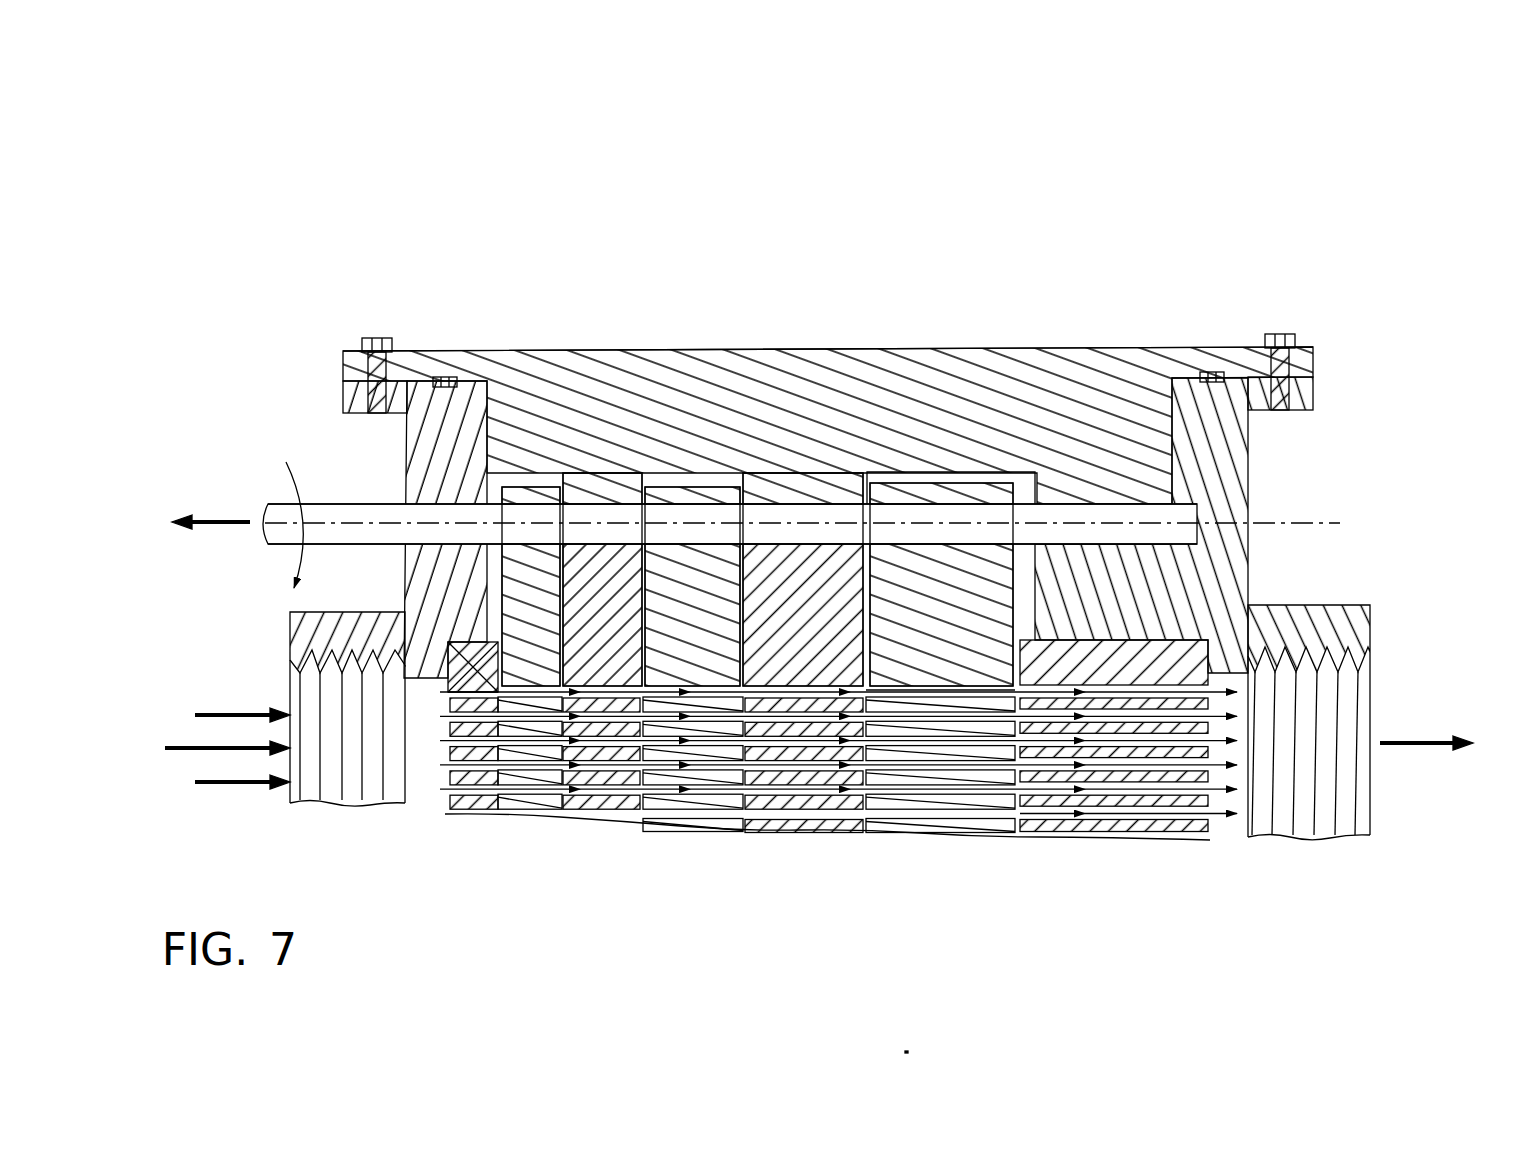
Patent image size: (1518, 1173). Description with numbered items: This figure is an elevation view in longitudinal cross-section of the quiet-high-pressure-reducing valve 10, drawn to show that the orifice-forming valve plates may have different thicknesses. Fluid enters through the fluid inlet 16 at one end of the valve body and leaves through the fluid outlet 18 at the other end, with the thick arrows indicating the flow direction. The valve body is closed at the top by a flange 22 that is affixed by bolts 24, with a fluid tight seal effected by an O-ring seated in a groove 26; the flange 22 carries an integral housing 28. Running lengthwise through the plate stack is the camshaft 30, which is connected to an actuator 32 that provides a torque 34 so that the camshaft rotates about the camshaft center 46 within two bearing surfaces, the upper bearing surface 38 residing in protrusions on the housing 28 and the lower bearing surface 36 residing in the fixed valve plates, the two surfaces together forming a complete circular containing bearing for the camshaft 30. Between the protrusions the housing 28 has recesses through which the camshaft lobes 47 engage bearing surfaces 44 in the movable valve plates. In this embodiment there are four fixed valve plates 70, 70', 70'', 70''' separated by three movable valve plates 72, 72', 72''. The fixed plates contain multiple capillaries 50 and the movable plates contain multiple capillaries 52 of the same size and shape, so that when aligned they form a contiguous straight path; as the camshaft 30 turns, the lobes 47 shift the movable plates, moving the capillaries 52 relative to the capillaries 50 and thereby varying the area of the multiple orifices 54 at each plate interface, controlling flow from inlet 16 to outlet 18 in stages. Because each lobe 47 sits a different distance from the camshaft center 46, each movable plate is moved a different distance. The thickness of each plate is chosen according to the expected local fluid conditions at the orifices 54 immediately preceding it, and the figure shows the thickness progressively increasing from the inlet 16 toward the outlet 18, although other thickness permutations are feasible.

The quiet-high-pressure-reducing valve 10 is at (1003, 340).
The fluid inlet 16 is at (262, 709).
The fluid outlet 18 is at (1377, 722).
The flange 22 is at (515, 370).
The bolts 24 is at (345, 352).
The groove 26 is at (440, 378).
The housing 28 is at (1088, 395).
The camshaft 30 is at (1113, 513).
The actuator 32 is at (666, 524).
The torque 34 is at (281, 533).
The lower bearing surface 36 is at (748, 617).
The upper bearing surface 38 is at (612, 493).
The bearing surfaces in movable valve plates 44 is at (543, 493).
The center of the camshaft 46 is at (821, 520).
The camshaft lobes 47 is at (938, 540).
The capillaries of fixed valve plates 50 is at (447, 692).
The capillaries of movable valve plates 52 is at (470, 721).
The multiple orifices 54 is at (495, 690).
The fixed valve plate 70 is at (479, 788).
The fixed valve plate 70' is at (601, 799).
The fixed valve plate 70'' is at (804, 815).
The fixed valve plate 70''' is at (1114, 778).
The movable valve plate 72 is at (530, 803).
The movable valve plate 72' is at (693, 807).
The movable valve plate 72'' is at (940, 813).